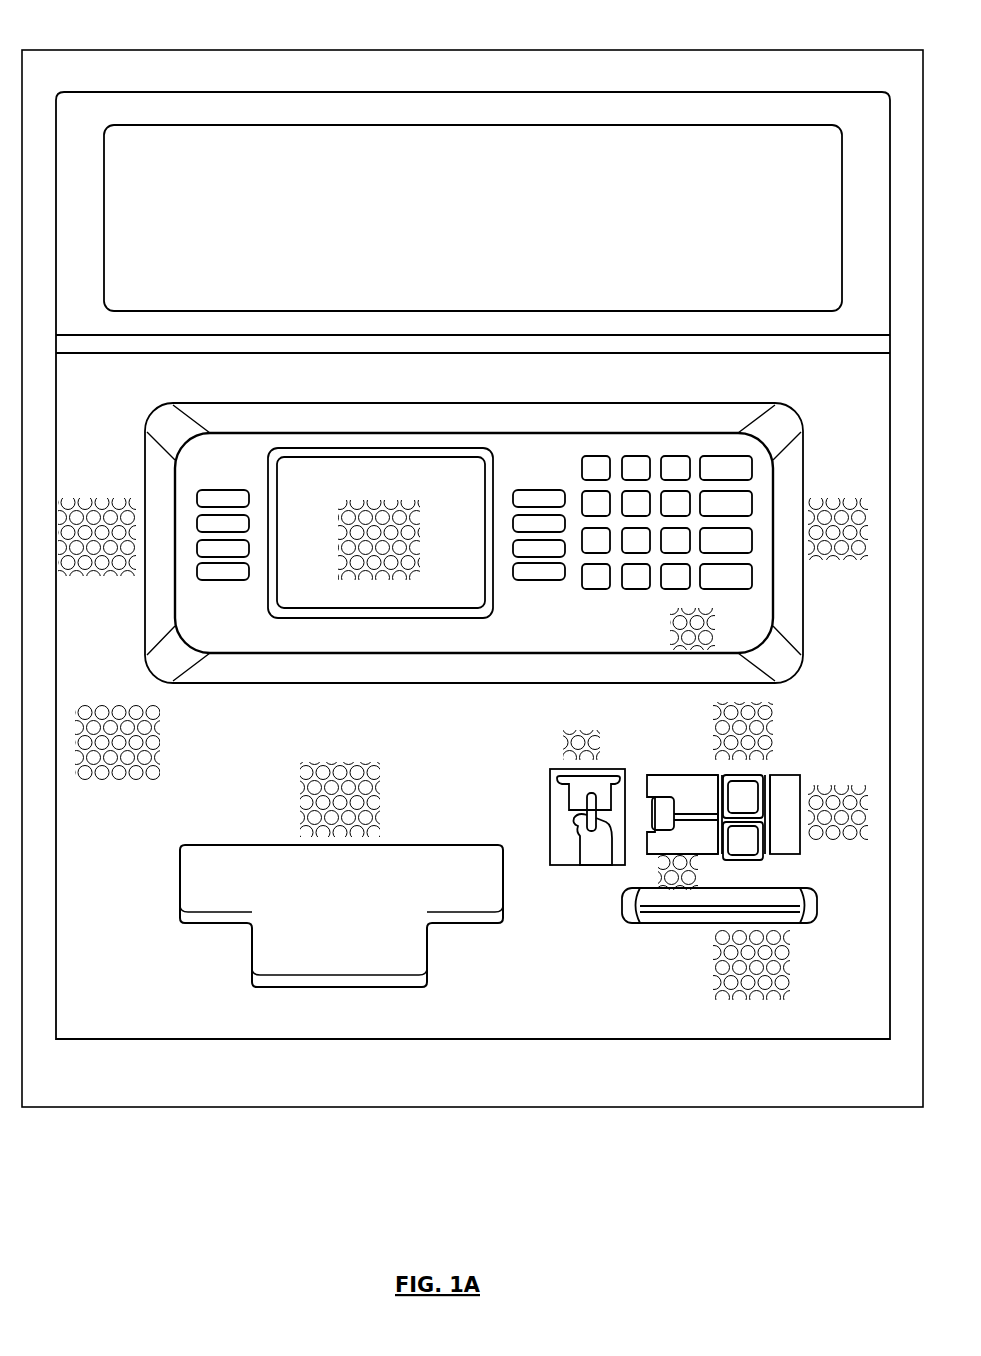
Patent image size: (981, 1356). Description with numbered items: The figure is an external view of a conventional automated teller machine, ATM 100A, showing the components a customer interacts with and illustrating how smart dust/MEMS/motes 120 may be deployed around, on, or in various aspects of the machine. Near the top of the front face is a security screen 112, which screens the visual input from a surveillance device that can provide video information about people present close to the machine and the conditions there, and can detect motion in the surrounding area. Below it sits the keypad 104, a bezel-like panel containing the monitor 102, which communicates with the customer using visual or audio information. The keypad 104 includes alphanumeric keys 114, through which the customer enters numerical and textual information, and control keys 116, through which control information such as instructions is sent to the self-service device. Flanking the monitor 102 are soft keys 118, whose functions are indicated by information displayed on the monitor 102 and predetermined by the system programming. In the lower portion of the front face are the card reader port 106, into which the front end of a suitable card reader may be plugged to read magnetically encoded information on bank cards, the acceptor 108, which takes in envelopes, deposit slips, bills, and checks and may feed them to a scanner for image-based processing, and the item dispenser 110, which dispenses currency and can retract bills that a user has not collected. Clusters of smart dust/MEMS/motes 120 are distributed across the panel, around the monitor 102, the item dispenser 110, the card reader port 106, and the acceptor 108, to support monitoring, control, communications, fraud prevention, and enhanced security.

The ATM 100A is at (472, 559).
The monitor 102 is at (413, 452).
The keypad 104 is at (532, 633).
The card reader port 106 is at (797, 775).
The acceptor 108 is at (795, 887).
The item dispenser 110 is at (210, 843).
The security screen 112 is at (747, 125).
The alphanumeric keys 114 is at (592, 590).
The control keys 116 is at (733, 448).
The soft keys 118 is at (227, 477).
The smart dust/MEMS/motes 120 is at (465, 726).